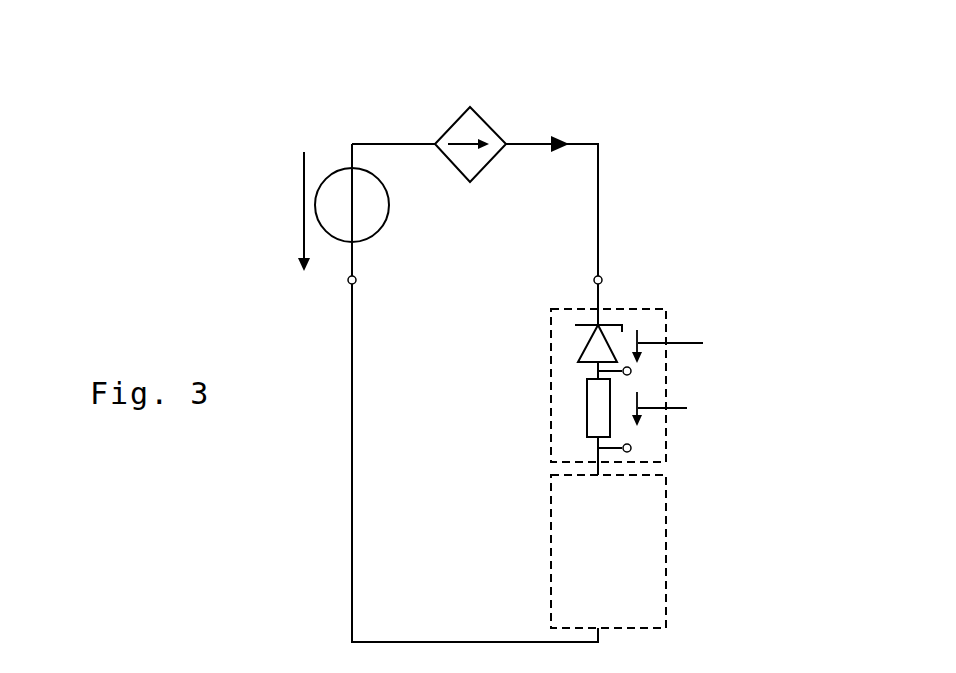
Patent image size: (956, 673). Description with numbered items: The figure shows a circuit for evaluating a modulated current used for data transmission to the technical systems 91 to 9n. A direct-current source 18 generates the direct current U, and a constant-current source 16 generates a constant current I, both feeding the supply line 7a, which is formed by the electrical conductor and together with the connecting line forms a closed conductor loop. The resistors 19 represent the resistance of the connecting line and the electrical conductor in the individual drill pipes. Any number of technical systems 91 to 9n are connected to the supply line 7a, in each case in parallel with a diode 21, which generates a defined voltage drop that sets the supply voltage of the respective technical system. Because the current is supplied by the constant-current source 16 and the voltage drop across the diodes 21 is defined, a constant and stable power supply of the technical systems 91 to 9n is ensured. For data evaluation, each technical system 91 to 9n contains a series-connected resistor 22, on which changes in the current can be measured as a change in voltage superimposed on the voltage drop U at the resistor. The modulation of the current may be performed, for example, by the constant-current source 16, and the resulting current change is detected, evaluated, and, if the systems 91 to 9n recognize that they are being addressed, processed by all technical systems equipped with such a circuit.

The supply line 7a is at (348, 510).
The constant-current source 16 is at (492, 122).
The direct-current source 18 is at (325, 178).
The resistors 19 is at (600, 220).
The technical system 91 is at (667, 308).
The technical system 9n is at (667, 548).
The diodes 21 is at (610, 342).
The series-connected resistor 22 is at (612, 428).
The constant current I is at (568, 142).
The direct current U is at (303, 188).